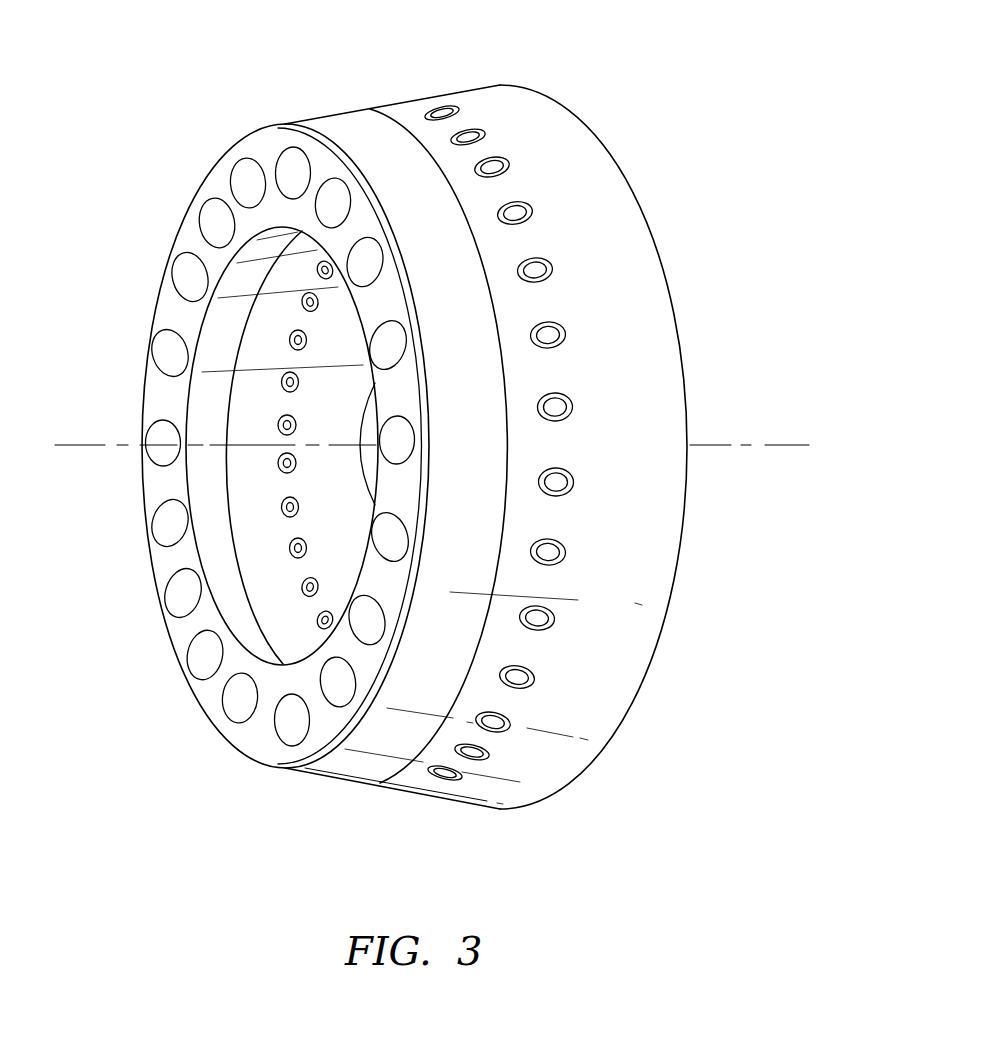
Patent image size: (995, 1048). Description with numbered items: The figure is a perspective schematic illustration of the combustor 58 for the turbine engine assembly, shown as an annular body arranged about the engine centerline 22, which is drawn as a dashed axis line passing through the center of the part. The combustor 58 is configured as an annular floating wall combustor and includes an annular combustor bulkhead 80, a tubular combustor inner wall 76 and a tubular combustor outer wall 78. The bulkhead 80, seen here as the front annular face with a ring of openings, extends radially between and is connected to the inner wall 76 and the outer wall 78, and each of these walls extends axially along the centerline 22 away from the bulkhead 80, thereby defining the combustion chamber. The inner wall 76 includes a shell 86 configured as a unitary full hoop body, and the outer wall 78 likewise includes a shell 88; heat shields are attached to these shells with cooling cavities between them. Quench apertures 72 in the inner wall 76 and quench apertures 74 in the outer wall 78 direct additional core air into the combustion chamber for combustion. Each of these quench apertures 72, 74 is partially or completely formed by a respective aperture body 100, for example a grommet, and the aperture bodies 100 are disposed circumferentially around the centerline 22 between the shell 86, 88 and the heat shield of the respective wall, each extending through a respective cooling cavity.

The combustor 58 is at (602, 96).
The shell 88 is at (640, 251).
The outer wall 78 is at (644, 338).
The quench aperture 74 is at (558, 405).
The aperture body 100 is at (574, 479).
The centerline 22 is at (777, 444).
The shell 86 is at (207, 425).
The quench aperture 72 is at (278, 463).
The inner wall 76 is at (235, 560).
The combustor bulkhead 80 is at (257, 741).